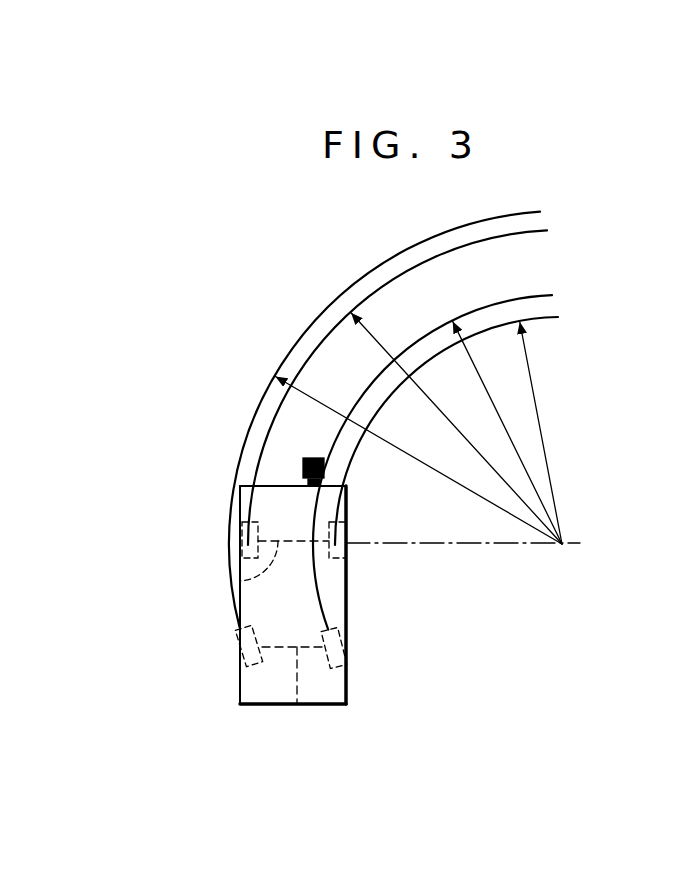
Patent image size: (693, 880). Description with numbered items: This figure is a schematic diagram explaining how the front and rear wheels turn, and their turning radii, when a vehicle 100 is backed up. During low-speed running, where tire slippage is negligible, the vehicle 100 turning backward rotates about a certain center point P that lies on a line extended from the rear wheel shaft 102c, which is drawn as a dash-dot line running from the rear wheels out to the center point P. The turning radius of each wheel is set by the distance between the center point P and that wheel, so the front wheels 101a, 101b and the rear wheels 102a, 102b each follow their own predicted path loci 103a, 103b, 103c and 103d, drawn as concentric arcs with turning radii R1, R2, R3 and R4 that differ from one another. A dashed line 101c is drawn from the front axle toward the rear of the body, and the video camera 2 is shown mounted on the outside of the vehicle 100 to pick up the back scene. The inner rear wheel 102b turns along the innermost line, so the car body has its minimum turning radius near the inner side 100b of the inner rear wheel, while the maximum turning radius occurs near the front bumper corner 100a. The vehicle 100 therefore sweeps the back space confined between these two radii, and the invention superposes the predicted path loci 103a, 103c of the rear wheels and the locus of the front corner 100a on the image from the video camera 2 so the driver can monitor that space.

The video camera 2 is at (305, 463).
The vehicle 100 is at (239, 676).
The front bumper corner 100a is at (347, 701).
The inner side of the inner rear wheel 100b is at (347, 487).
The front wheel 101a is at (236, 640).
The front wheel 101b is at (347, 652).
The front axle center line 101c is at (298, 706).
The rear wheel 102a is at (243, 527).
The inner rear wheel 102b is at (350, 556).
The rear wheel shaft 102c is at (240, 583).
The predicted path locus 103a is at (558, 318).
The predicted path locus 103b is at (530, 292).
The predicted path locus 103c is at (530, 228).
The predicted path locus 103d is at (522, 210).
The turning radius R1 is at (544, 433).
The turning radius R2 is at (507, 432).
The turning radius R3 is at (456, 428).
The turning radius R4 is at (418, 461).
The center point P is at (463, 559).